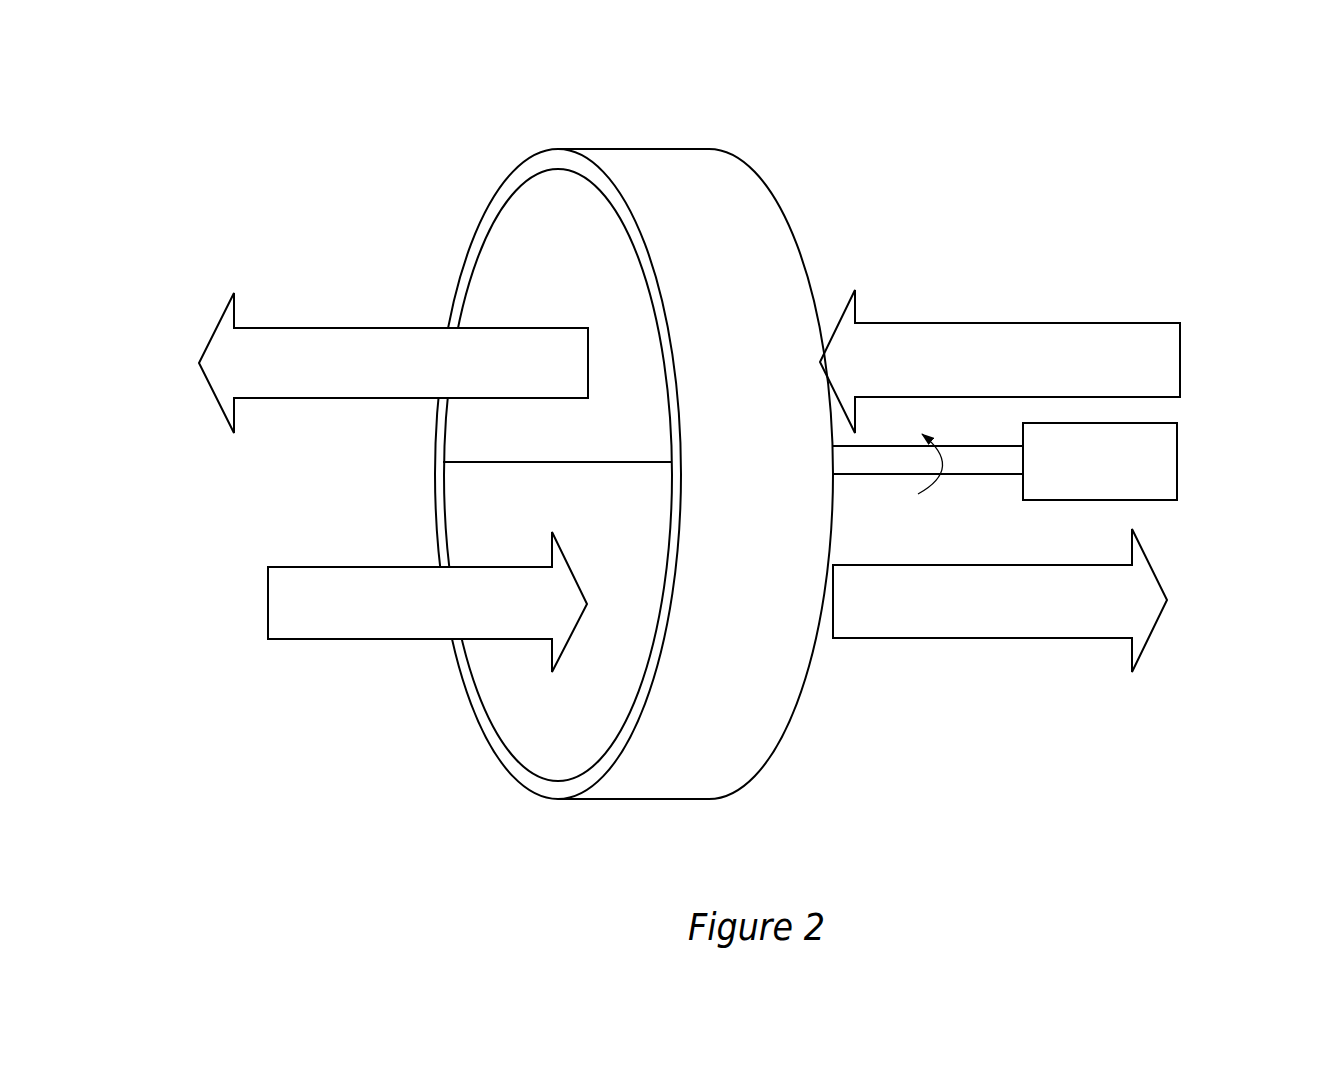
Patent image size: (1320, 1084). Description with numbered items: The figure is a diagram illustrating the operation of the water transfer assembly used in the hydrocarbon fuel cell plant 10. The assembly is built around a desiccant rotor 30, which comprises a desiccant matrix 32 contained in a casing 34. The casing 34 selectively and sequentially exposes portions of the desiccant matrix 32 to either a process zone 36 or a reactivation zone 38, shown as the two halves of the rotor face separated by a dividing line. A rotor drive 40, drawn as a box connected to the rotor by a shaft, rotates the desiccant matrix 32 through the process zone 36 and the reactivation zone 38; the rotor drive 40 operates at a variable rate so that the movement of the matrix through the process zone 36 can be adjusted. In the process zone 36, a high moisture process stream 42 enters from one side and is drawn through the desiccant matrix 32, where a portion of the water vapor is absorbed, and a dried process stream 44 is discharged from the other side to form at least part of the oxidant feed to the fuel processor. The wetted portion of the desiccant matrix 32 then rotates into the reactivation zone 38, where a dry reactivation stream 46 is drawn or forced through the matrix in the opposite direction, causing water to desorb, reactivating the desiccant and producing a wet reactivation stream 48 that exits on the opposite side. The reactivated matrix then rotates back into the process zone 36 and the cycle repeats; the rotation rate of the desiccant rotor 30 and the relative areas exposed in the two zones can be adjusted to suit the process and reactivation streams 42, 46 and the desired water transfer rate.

The hydrocarbon fuel cell plant 10 is at (710, 461).
The desiccant rotor 30 is at (617, 471).
The desiccant matrix 32 is at (468, 427).
The casing 34 is at (655, 165).
The process zone 36 is at (558, 710).
The reactivation zone 38 is at (538, 272).
The rotor drive 40 is at (1160, 464).
The process stream 42 is at (335, 643).
The dried process stream 44 is at (1055, 642).
The dry reactivation stream 46 is at (977, 323).
The wet reactivation stream 48 is at (318, 325).